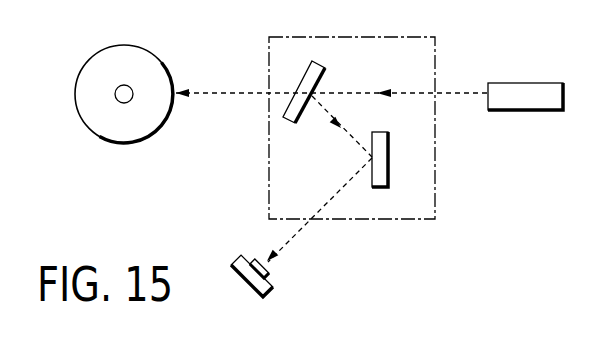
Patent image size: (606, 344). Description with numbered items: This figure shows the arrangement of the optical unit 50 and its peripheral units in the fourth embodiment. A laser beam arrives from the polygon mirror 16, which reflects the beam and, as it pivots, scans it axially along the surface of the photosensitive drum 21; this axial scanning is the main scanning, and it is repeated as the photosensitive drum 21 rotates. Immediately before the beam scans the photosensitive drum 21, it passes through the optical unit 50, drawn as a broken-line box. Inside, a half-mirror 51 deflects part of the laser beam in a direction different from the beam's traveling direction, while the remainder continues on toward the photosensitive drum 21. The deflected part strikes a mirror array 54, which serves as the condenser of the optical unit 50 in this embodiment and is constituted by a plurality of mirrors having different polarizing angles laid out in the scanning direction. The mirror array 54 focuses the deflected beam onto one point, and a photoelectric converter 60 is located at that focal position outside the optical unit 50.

The polygon mirror 16 is at (527, 83).
The photosensitive drum 21 is at (161, 129).
The optical unit 50 is at (435, 50).
The half-mirror 51 is at (325, 64).
The mirror array 54 is at (388, 158).
The photoelectric converter 60 is at (240, 258).